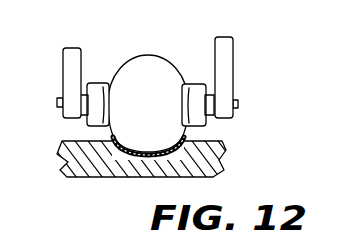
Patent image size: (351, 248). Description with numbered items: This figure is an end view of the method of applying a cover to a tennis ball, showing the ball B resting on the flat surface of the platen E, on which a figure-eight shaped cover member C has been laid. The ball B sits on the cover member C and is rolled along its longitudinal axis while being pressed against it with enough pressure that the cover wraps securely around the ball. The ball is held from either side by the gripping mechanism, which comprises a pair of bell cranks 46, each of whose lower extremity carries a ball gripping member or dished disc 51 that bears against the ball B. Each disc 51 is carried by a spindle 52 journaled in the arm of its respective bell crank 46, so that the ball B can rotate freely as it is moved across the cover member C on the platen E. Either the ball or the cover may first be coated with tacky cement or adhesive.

The bell crank 46 is at (68, 46).
The ball gripping member or dished disc 51 is at (98, 83).
The spindle 52 is at (57, 102).
The ball B is at (152, 78).
The cover member C is at (178, 142).
The platen E is at (213, 152).